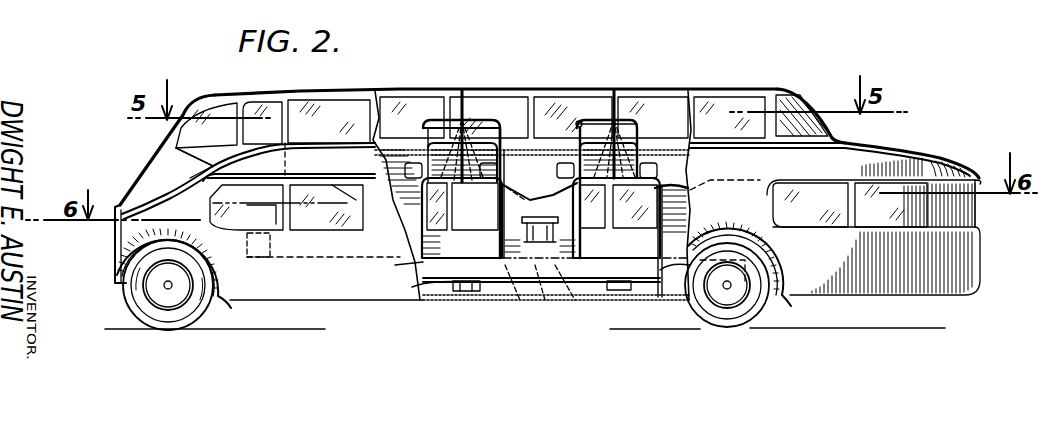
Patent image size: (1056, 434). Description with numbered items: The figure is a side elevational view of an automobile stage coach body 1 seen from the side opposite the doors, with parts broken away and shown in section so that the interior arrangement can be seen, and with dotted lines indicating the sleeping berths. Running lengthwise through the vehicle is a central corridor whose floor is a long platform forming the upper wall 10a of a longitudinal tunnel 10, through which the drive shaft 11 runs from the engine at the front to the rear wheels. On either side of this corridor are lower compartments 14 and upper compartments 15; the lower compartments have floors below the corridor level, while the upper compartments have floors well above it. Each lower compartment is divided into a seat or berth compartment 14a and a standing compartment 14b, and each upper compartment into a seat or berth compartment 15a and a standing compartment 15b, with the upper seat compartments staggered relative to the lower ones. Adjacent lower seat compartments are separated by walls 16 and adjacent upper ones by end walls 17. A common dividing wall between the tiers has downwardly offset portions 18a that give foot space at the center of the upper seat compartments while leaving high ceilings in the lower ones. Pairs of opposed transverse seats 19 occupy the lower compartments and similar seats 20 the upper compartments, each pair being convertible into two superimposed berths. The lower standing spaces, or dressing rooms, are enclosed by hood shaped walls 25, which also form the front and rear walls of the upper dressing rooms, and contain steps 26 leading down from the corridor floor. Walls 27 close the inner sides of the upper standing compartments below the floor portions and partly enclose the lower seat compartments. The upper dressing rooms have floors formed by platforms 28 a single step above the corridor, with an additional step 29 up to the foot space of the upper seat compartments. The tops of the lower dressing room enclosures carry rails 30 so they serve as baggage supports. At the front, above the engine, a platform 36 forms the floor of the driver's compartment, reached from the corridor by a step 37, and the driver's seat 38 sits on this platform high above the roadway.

The vehicle body 1 is at (548, 194).
The longitudinal tunnel 10 is at (405, 281).
The upper wall of tunnel 10a is at (397, 267).
The drive shaft 11 is at (413, 289).
The lower compartment 14 is at (670, 187).
The lower seat or berth compartment 14a is at (645, 303).
The lower standing compartment 14b is at (705, 295).
The upper compartment 15 is at (556, 126).
The upper seat or berth compartment 15a is at (568, 141).
The upper standing compartment 15b is at (596, 168).
The wall 16 is at (532, 297).
The end wall 17 is at (463, 91).
The downwardly offset portion 18a is at (500, 196).
The lower seat 19 is at (580, 297).
The upper seat 20 is at (524, 148).
The hood shaped wall 25 is at (505, 133).
The step 26 is at (460, 303).
The wall 27 is at (502, 212).
The platform 28 is at (513, 275).
The additional step 29 is at (512, 289).
The rail 30 is at (500, 123).
The platform 36 is at (230, 160).
The step 37 is at (268, 257).
The driver's seat 38 is at (217, 180).